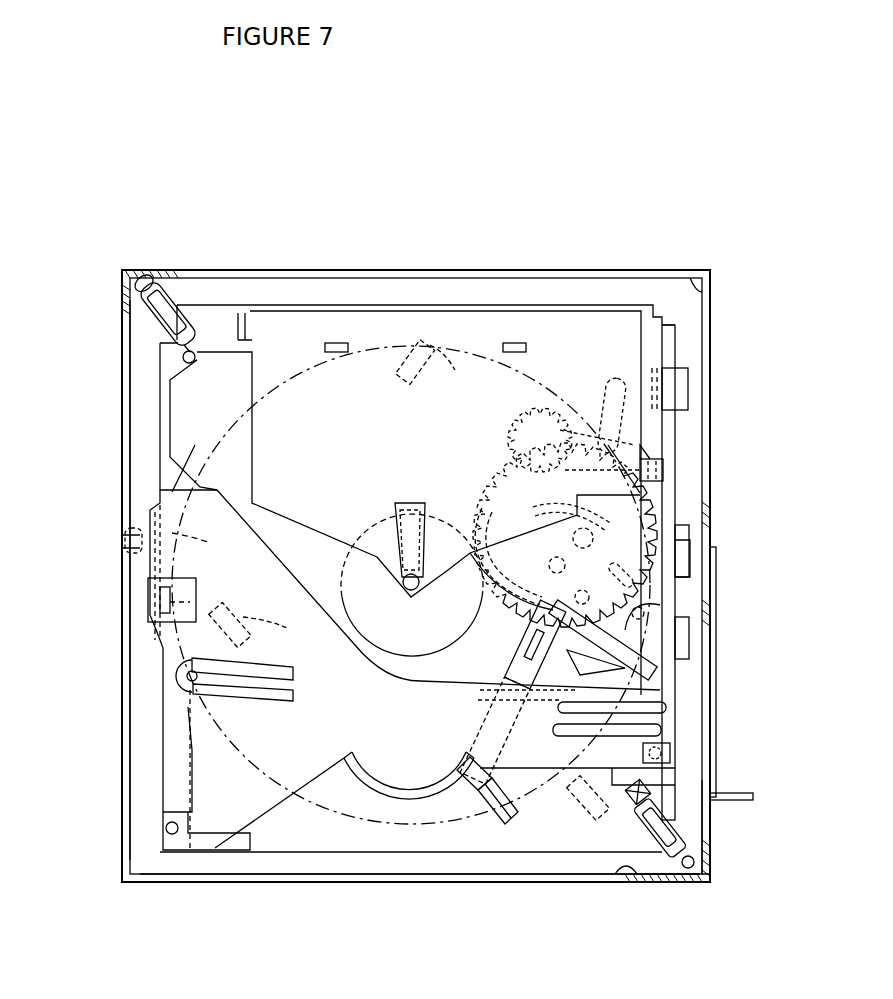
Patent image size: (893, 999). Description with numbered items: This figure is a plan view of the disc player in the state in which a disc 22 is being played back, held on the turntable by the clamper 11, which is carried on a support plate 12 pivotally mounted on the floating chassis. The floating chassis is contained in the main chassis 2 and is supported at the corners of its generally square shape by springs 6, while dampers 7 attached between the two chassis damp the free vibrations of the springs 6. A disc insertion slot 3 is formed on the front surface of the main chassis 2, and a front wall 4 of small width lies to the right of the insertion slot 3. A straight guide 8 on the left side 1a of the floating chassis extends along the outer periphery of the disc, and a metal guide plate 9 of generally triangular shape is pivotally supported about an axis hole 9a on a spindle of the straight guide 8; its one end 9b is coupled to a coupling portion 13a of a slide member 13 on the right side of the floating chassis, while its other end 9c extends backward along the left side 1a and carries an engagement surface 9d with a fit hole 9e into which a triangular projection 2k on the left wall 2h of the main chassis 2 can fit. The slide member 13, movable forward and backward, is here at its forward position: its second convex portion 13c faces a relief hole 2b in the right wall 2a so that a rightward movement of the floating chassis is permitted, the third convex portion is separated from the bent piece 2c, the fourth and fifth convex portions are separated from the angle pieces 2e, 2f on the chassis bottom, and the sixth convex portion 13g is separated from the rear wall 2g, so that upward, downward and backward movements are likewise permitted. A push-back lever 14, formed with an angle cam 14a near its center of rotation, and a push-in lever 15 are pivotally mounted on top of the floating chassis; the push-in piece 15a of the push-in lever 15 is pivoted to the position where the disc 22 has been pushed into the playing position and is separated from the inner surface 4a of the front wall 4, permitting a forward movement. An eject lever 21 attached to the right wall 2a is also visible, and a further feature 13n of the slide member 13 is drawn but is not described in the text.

The main chassis 2 is at (116, 403).
The left side 1a is at (145, 432).
The left wall 2h is at (122, 497).
The triangular projection 2k is at (128, 545).
The right wall 2a is at (712, 838).
The relief hole 2b is at (705, 530).
The bent piece 2c is at (712, 490).
The angle piece 2e is at (689, 647).
The angle piece 2f is at (689, 386).
The rear wall 2g is at (697, 283).
The disc insertion slot 3 is at (430, 862).
The front wall 4 is at (652, 886).
The inner surface 4a is at (620, 878).
The springs 6 is at (172, 278).
The dampers 7 is at (410, 388).
The straight guide 8 is at (160, 762).
The guide plate 9 is at (272, 552).
The axis hole 9a is at (166, 828).
The one end 9b is at (680, 751).
The other end 9c is at (190, 500).
The engagement surface 9d is at (148, 590).
The fit hole 9e is at (232, 617).
The clamper 11 is at (370, 625).
The support plate 12 is at (548, 320).
The slide member 13 is at (672, 603).
The coupling portion 13a is at (660, 772).
The second convex portion 13c is at (690, 572).
The sixth convex portion 13g is at (665, 330).
The plate bracket 13n is at (670, 495).
The push-back lever 14 is at (508, 598).
The angle cam 14a is at (500, 480).
The push-in lever 15 is at (528, 676).
The push-in piece 15a is at (487, 822).
The eject lever 21 is at (716, 695).
The disc 22 is at (343, 770).